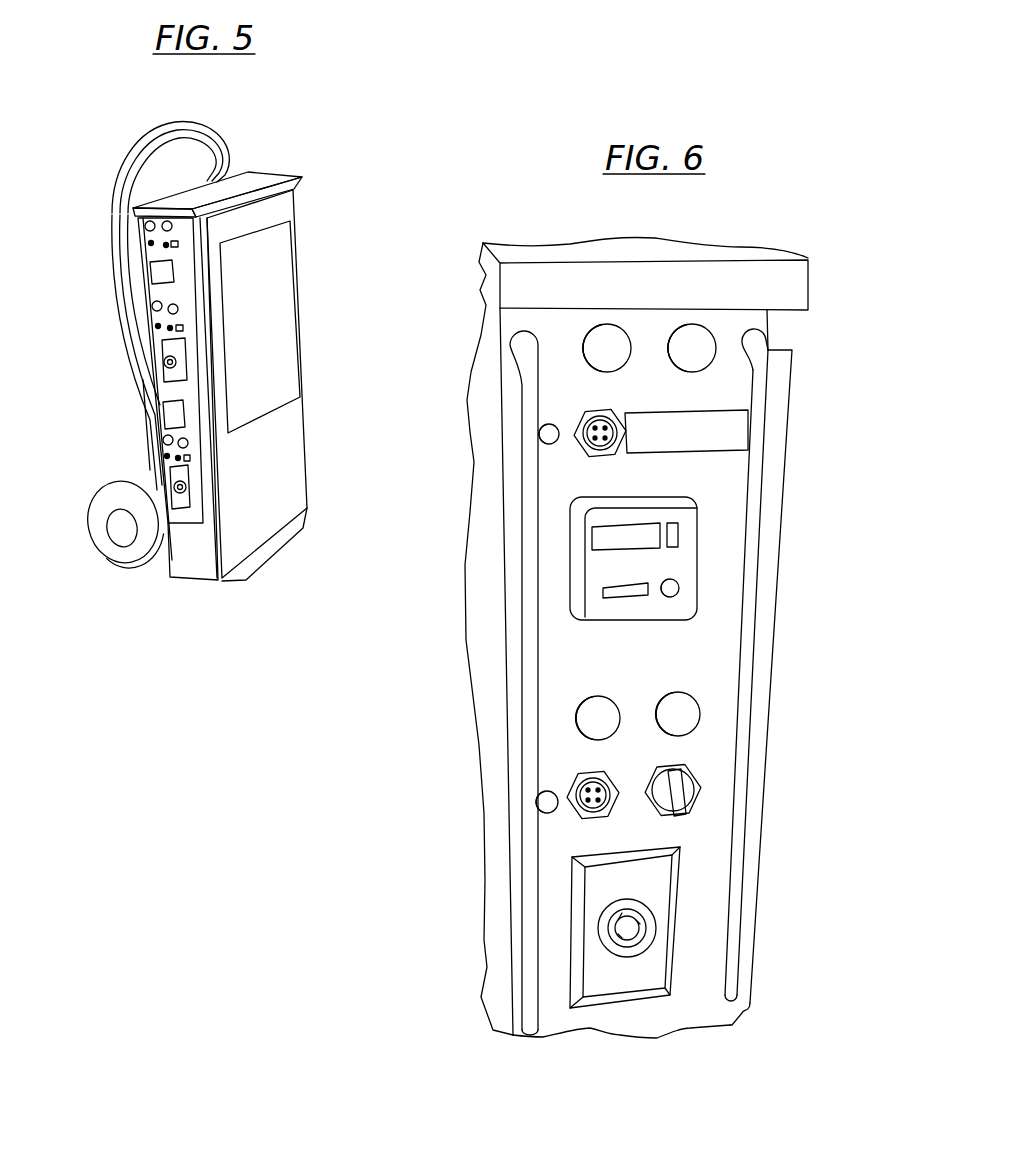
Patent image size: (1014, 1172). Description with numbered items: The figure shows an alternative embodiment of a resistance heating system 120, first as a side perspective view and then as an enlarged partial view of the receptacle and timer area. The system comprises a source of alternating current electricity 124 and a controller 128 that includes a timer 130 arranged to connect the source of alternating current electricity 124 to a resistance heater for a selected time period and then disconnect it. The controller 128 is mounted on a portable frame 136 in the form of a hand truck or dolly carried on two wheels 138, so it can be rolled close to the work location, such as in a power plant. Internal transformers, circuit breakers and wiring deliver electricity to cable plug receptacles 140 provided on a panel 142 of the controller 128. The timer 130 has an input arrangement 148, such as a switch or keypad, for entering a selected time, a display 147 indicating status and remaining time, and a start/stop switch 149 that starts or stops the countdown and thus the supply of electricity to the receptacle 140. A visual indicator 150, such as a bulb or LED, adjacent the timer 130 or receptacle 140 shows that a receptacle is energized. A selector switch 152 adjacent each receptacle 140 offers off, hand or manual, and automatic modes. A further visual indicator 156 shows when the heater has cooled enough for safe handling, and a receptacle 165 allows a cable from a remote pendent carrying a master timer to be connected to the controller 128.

In FIG. 5, the resistance heating system 120 is at (312, 222).
In FIG. 5, the source of alternating current electricity 124 is at (125, 172).
In FIG. 5, the controller 128 is at (293, 422).
In FIG. 6, the controller 128 is at (778, 575).
In FIG. 5, the timer 130 is at (172, 418).
In FIG. 6, the timer 130 is at (688, 527).
In FIG. 5, the portable frame 136 is at (147, 410).
In FIG. 5, the wheels 138 is at (122, 555).
In FIG. 5, the cable plug receptacle 140 is at (163, 363).
In FIG. 6, the cable plug receptacle 140 is at (632, 935).
In FIG. 6, the panel 142 is at (553, 1012).
In FIG. 6, the display 147 is at (623, 539).
In FIG. 6, the input arrangement 148 is at (678, 598).
In FIG. 6, the start/stop switch 149 is at (618, 587).
In FIG. 6, the visual indicator 150 is at (686, 717).
In FIG. 6, the selector switch 152 is at (682, 805).
In FIG. 6, the visual indicator 156 is at (596, 726).
In FIG. 6, the receptacle 165 is at (617, 452).